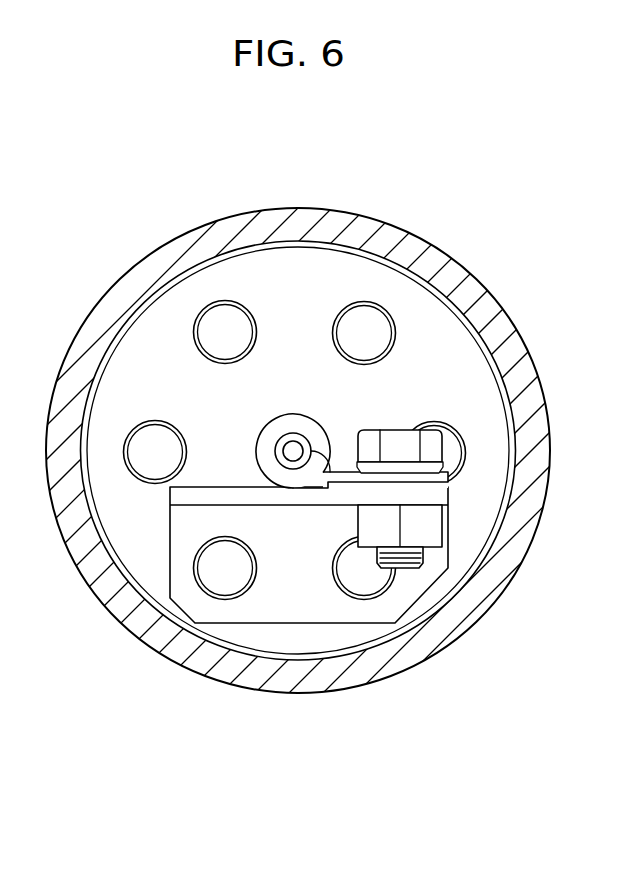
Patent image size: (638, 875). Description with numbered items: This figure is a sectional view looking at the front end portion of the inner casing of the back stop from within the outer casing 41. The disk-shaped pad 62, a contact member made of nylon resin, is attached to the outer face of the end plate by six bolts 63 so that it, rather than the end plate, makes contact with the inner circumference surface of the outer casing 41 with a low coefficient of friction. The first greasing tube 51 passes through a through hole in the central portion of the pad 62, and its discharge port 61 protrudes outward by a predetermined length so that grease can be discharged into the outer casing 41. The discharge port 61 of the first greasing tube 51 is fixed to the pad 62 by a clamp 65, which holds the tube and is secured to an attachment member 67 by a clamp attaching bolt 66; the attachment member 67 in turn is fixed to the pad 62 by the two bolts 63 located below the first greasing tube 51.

The outer casing 41 is at (310, 685).
The first greasing tube 51 is at (305, 437).
The discharge port 61 is at (288, 450).
The pad 62 is at (455, 347).
The bolts 63 is at (207, 339).
The clamp 65 is at (283, 423).
The clamp attaching bolt 66 is at (395, 438).
The attachment member 67 is at (182, 530).